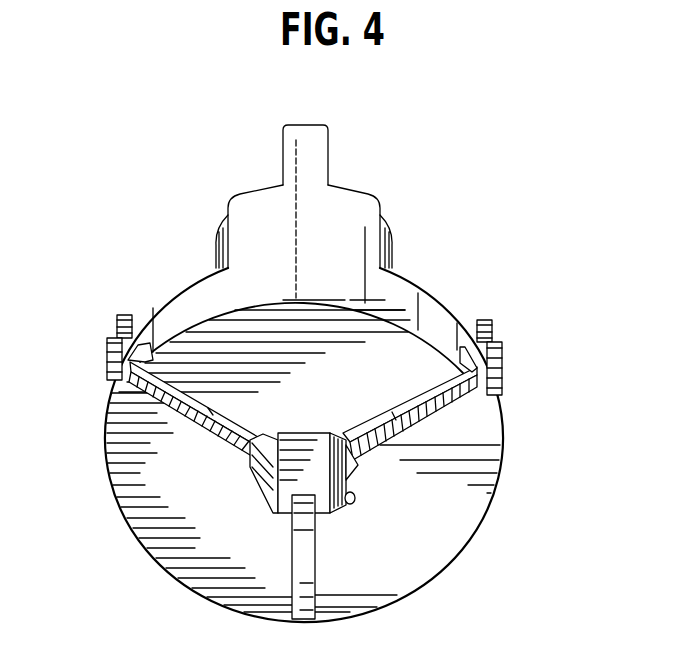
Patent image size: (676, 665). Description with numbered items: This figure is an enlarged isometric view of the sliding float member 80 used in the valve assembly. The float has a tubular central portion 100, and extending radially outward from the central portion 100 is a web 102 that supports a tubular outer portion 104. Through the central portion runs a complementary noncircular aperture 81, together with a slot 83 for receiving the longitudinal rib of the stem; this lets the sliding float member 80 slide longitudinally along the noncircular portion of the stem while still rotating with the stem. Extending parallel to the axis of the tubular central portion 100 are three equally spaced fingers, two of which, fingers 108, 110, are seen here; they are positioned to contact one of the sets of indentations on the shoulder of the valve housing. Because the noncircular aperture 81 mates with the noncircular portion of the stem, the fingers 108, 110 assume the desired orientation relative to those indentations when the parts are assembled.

The sliding float member 80 is at (420, 280).
The noncircular aperture 81 is at (305, 432).
The slot 83 is at (355, 500).
The tubular central portion 100 is at (223, 233).
The web 102 is at (448, 510).
The tubular outer portion 104 is at (357, 210).
The finger 108 is at (312, 124).
The finger 110 is at (120, 315).